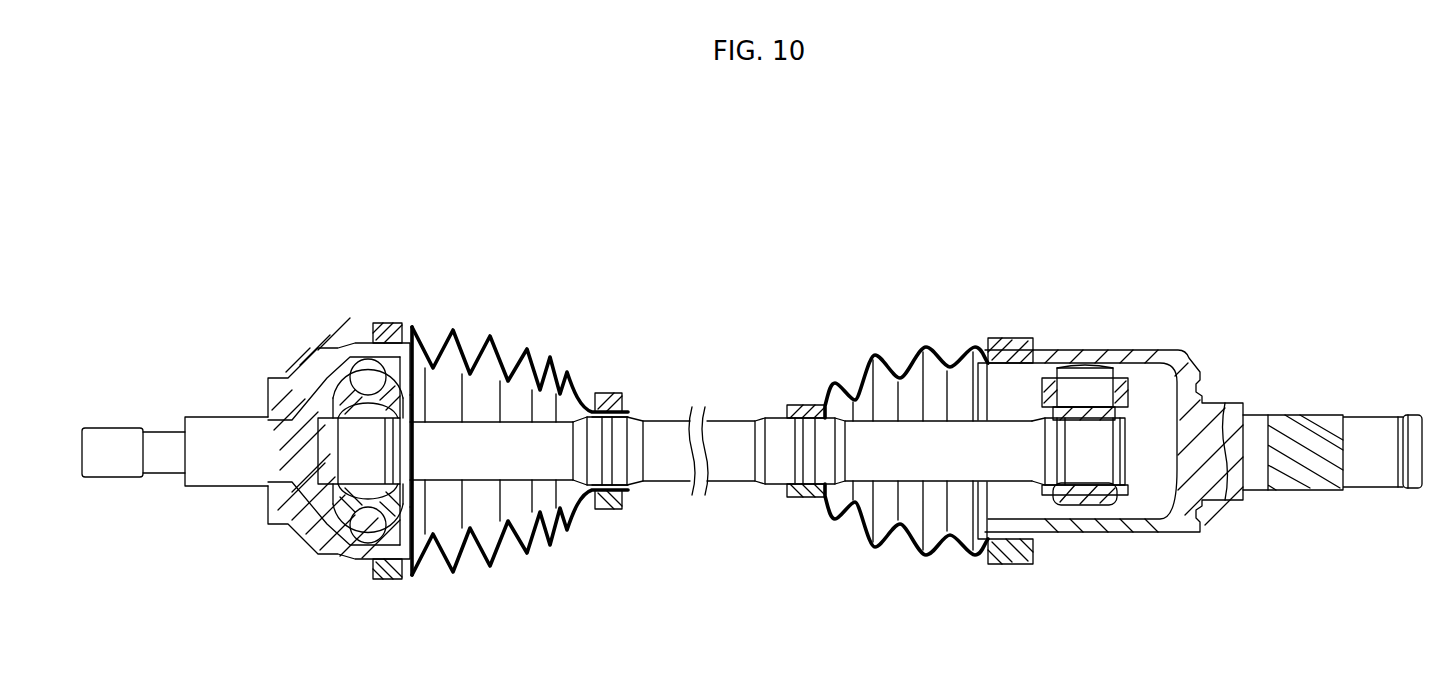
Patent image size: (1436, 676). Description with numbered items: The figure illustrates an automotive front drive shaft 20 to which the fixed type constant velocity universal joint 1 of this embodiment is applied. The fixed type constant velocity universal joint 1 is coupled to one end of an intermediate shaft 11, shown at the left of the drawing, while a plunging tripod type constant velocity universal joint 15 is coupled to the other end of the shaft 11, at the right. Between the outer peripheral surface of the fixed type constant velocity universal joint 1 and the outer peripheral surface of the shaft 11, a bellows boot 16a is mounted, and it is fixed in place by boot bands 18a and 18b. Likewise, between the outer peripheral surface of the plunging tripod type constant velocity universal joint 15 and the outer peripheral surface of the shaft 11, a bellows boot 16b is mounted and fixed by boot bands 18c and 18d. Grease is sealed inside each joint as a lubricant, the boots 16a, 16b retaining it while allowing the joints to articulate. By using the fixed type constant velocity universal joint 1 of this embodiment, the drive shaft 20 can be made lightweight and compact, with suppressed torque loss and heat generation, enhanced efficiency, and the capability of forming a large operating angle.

The fixed type constant velocity universal joint 1 is at (315, 322).
The intermediate shaft 11 is at (668, 420).
The plunging tripod type constant velocity universal joint 15 is at (1117, 323).
The bellows boot 16a is at (507, 333).
The bellows boot 16b is at (902, 343).
The boot band 18a is at (377, 322).
The boot band 18b is at (600, 393).
The boot band 18c is at (1012, 338).
The boot band 18d is at (805, 405).
The automotive front drive shaft 20 is at (723, 366).